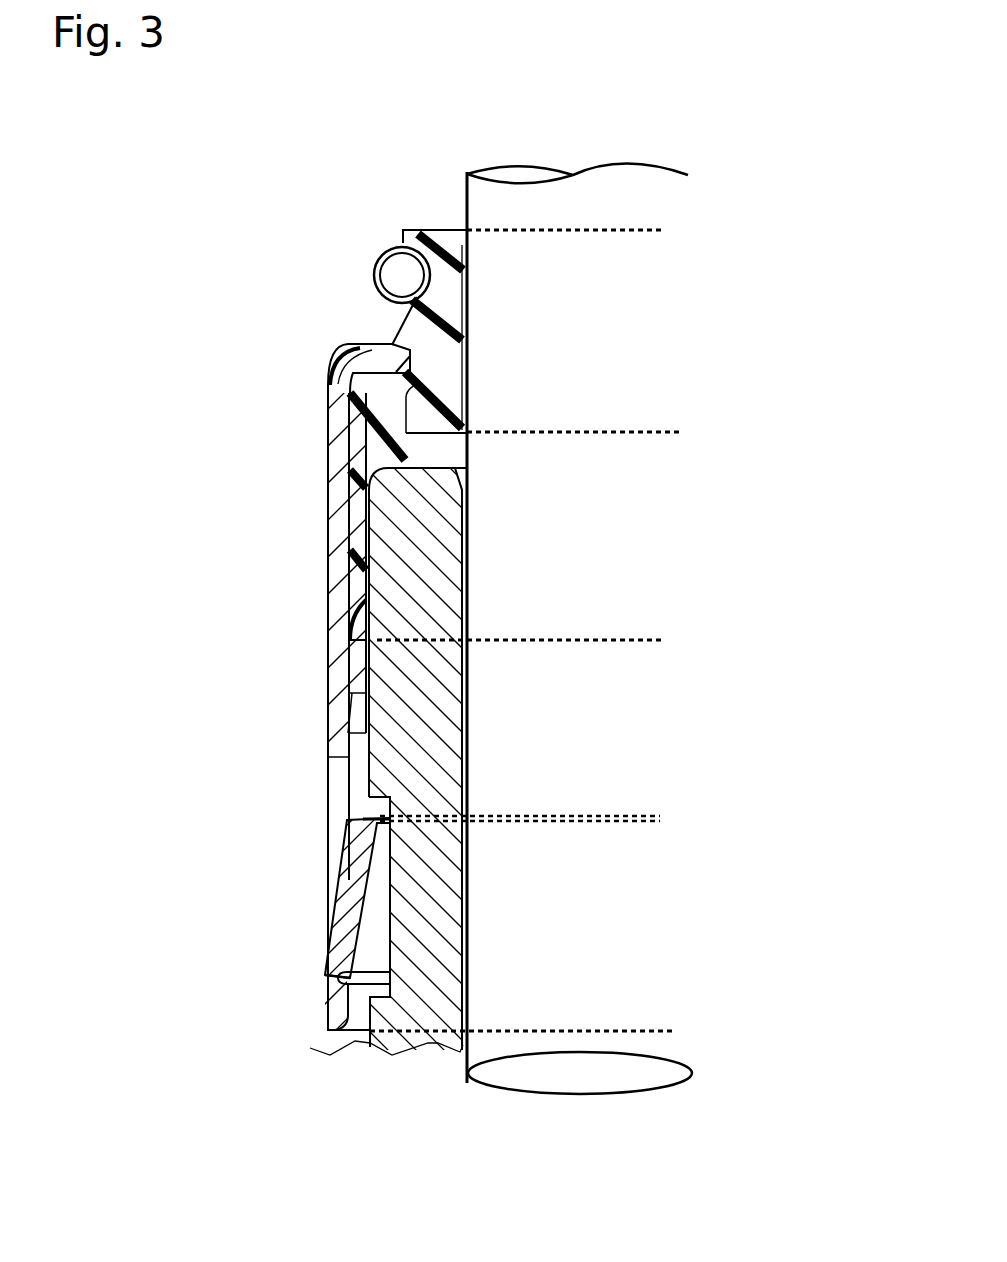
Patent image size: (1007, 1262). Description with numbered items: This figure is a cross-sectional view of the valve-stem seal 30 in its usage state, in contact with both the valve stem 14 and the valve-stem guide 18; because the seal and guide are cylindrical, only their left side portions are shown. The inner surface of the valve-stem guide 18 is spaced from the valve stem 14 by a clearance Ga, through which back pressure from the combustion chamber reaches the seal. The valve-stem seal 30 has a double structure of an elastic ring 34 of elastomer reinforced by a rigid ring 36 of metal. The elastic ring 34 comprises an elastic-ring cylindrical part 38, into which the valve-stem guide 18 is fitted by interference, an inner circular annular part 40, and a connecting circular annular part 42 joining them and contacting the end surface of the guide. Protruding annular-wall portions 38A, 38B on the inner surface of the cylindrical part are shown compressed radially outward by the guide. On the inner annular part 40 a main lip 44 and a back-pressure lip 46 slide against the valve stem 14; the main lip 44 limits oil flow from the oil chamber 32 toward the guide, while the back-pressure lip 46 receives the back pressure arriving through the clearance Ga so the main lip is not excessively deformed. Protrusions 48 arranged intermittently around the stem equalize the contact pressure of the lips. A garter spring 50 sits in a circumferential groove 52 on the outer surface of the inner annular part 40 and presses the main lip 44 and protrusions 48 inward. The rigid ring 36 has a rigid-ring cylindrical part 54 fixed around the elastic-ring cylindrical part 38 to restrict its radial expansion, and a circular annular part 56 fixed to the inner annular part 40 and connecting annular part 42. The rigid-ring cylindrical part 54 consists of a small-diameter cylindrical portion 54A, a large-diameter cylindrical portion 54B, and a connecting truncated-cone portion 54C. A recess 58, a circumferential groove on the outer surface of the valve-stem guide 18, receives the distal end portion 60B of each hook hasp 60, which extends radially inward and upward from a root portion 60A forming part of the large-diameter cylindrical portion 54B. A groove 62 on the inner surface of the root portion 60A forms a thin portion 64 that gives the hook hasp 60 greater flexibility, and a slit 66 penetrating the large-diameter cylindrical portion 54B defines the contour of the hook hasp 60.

The valve stem 14 is at (470, 1062).
The valve-stem guide 18 is at (450, 862).
The clearance Ga is at (470, 790).
The valve-stem seal 30 is at (222, 340).
The oil chamber 32 is at (292, 198).
The elastic ring 34 is at (336, 362).
The rigid ring 36 is at (340, 487).
The elastic-ring cylindrical part 38 is at (414, 510).
The protruding annular-wall portion 38A is at (372, 546).
The protruding annular-wall portion 38B is at (365, 593).
The inner circular annular part 40 is at (448, 244).
The connecting circular annular part 42 is at (400, 433).
The main lip 44 is at (470, 262).
The back-pressure lip 46 is at (469, 398).
The protrusions 48 is at (468, 318).
The garter spring 50 is at (375, 262).
The circumferential groove 52 is at (430, 278).
The rigid-ring cylindrical part 54 is at (340, 517).
The small-diameter cylindrical portion 54A is at (333, 600).
The large-diameter cylindrical portion 54B is at (325, 897).
The connecting truncated-cone portion 54C is at (327, 720).
The circular annular part 56 is at (367, 352).
The recess 58 is at (373, 812).
The hook hasp 60 is at (528, 700).
The root portion 60A is at (325, 1000).
The distal end portion 60B is at (373, 830).
The groove 62 is at (390, 977).
The thin portion 64 is at (325, 973).
The slit 66 is at (328, 865).